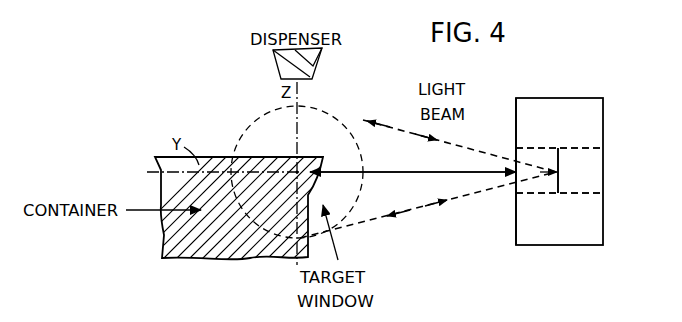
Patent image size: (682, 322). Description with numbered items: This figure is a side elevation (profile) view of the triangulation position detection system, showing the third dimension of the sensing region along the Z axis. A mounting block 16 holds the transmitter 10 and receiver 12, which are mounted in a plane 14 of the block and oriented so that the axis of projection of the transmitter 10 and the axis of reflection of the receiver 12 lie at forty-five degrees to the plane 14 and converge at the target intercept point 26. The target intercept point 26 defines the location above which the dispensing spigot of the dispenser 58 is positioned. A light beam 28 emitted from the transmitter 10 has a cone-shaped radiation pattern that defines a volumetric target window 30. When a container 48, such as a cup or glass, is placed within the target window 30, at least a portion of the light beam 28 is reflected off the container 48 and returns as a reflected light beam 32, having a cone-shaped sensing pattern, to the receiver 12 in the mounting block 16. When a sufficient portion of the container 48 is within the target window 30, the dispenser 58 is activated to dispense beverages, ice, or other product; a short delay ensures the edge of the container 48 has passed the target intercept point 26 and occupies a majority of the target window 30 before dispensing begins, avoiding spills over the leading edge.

The transmitter 10 is at (588, 176).
The receiver 12 is at (559, 170).
The plane 14 is at (517, 225).
The mounting block 16 is at (571, 96).
The target intercept point 26 is at (293, 172).
The light beam 28 is at (394, 214).
The target window 30 is at (284, 110).
The reflected light beam 32 is at (449, 203).
The container 48 is at (200, 250).
The dispenser 58 is at (313, 70).